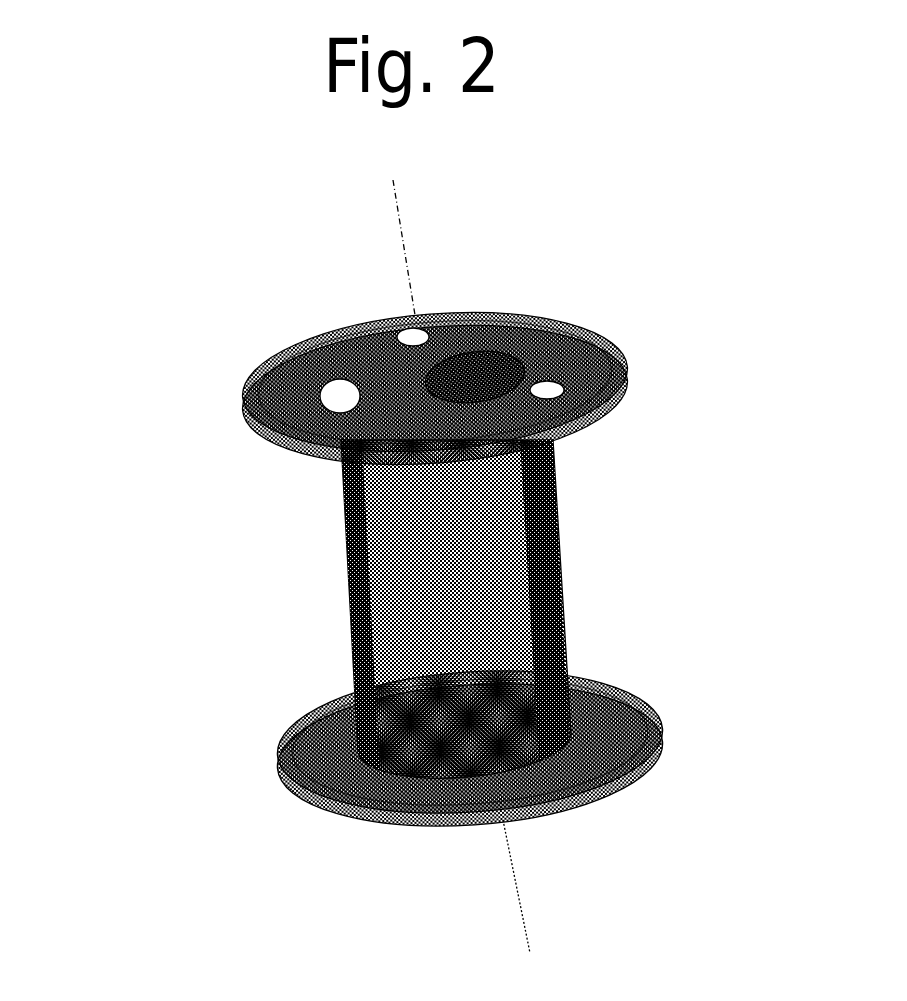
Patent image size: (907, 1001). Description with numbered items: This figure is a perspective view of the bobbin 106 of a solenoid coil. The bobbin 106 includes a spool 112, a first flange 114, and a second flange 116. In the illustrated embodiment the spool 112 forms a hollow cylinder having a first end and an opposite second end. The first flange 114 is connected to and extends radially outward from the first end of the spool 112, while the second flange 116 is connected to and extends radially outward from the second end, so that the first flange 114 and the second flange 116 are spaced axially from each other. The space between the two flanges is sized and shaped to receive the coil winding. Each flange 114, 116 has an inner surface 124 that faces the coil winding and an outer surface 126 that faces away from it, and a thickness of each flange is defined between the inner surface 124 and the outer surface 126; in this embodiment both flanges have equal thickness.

The bobbin 106 is at (220, 348).
The spool 112 is at (350, 608).
The first flange 114 is at (587, 332).
The second flange 116 is at (663, 743).
The inner surface 124 is at (625, 687).
The outer surface 126 is at (325, 390).